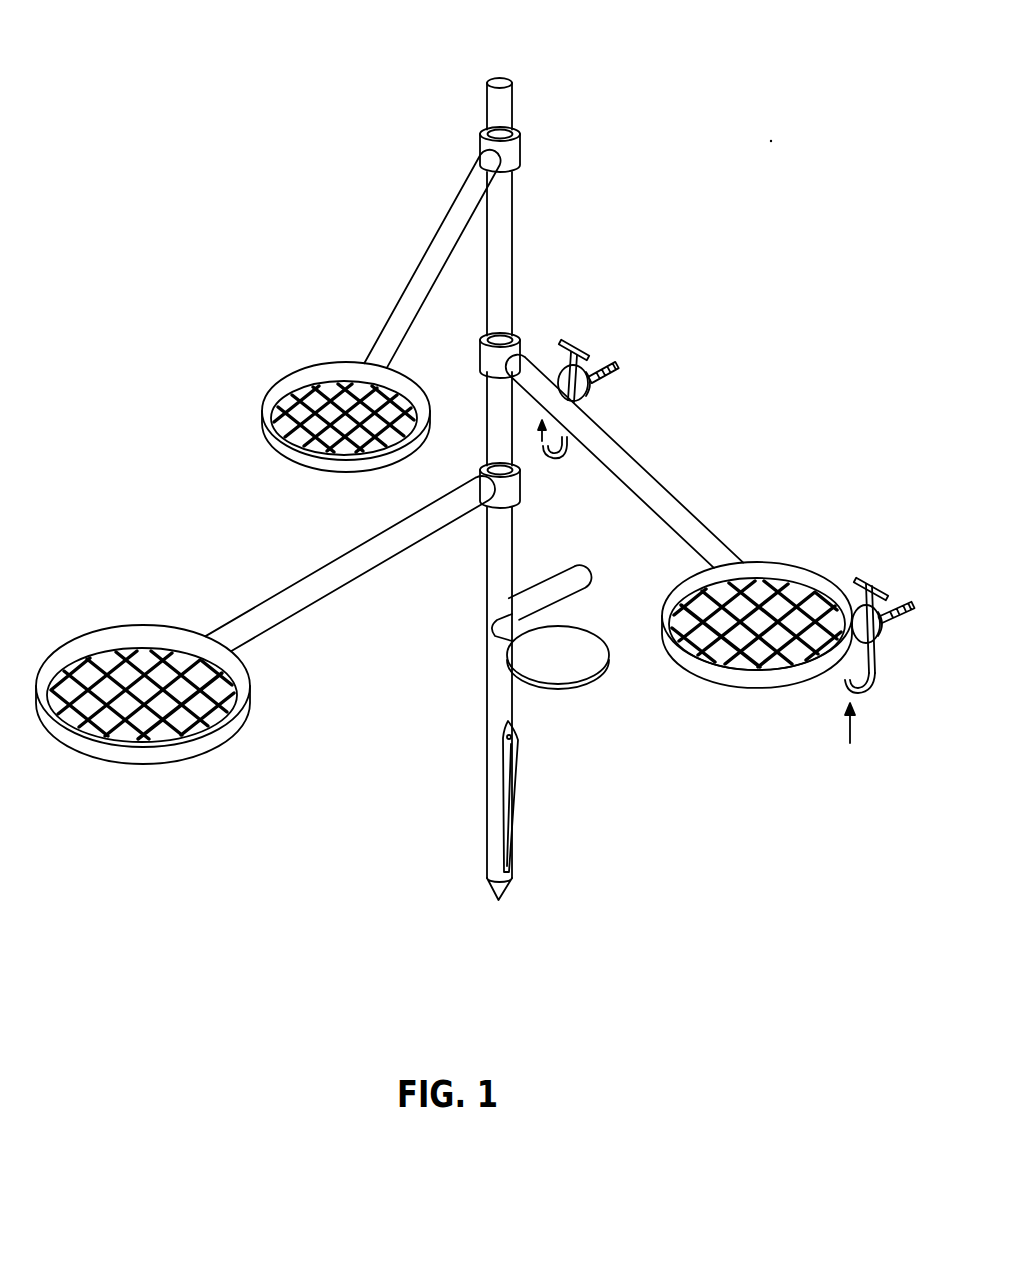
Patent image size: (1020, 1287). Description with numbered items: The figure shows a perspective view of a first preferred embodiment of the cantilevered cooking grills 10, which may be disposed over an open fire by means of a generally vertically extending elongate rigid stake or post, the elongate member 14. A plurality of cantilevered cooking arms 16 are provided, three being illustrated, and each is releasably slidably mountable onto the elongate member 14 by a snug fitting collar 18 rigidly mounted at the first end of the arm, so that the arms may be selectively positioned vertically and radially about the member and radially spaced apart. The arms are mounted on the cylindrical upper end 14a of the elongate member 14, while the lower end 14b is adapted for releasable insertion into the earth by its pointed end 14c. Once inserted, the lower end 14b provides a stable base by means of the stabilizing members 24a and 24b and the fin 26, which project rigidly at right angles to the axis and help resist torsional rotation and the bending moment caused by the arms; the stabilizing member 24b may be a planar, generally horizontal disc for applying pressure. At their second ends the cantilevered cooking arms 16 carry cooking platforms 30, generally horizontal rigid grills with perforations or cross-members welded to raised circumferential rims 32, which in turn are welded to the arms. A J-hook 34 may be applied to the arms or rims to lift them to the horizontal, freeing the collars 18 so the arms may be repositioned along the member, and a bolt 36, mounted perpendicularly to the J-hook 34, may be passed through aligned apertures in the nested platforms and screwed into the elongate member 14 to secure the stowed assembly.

The cantilevered cooking grills 10 is at (643, 183).
The elongate member 14 is at (527, 253).
The upper end 14a is at (510, 77).
The lower end 14b is at (523, 812).
The pointed end 14c is at (505, 890).
The cantilevered cooking arms 16 is at (455, 195).
The collar 18 is at (523, 137).
The stabilizing member 24a is at (557, 567).
The stabilizing member 24b is at (580, 683).
The fin 26 is at (520, 748).
The cooking platforms 30 is at (316, 395).
The circumferential rims 32 is at (286, 455).
The J-hook 34 is at (577, 345).
The bolt 36 is at (610, 385).